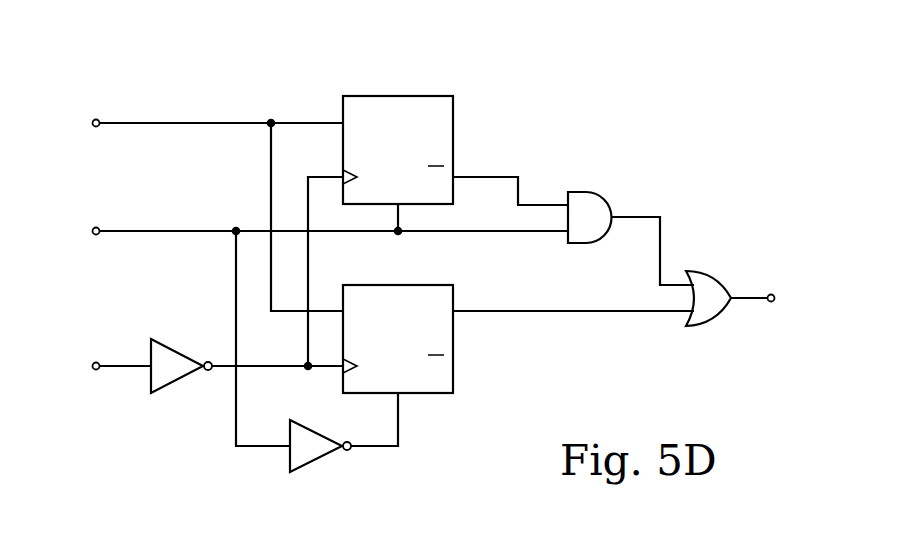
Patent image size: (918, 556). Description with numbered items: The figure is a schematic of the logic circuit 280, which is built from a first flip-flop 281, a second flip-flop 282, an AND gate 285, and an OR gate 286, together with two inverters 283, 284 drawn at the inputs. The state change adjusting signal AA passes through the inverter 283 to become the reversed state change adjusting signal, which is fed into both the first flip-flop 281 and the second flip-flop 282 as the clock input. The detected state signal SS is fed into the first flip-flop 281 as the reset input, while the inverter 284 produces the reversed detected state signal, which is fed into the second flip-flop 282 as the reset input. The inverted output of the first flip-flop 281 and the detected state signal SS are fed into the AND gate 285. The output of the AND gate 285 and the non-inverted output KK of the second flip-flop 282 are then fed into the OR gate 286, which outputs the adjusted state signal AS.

The logic circuit 280 is at (600, 108).
The first flip-flop 281 is at (423, 96).
The second flip-flop 282 is at (455, 338).
The first inverter 283 is at (177, 392).
The second inverter 284 is at (325, 460).
The AND gate 285 is at (602, 194).
The OR gate 286 is at (705, 268).